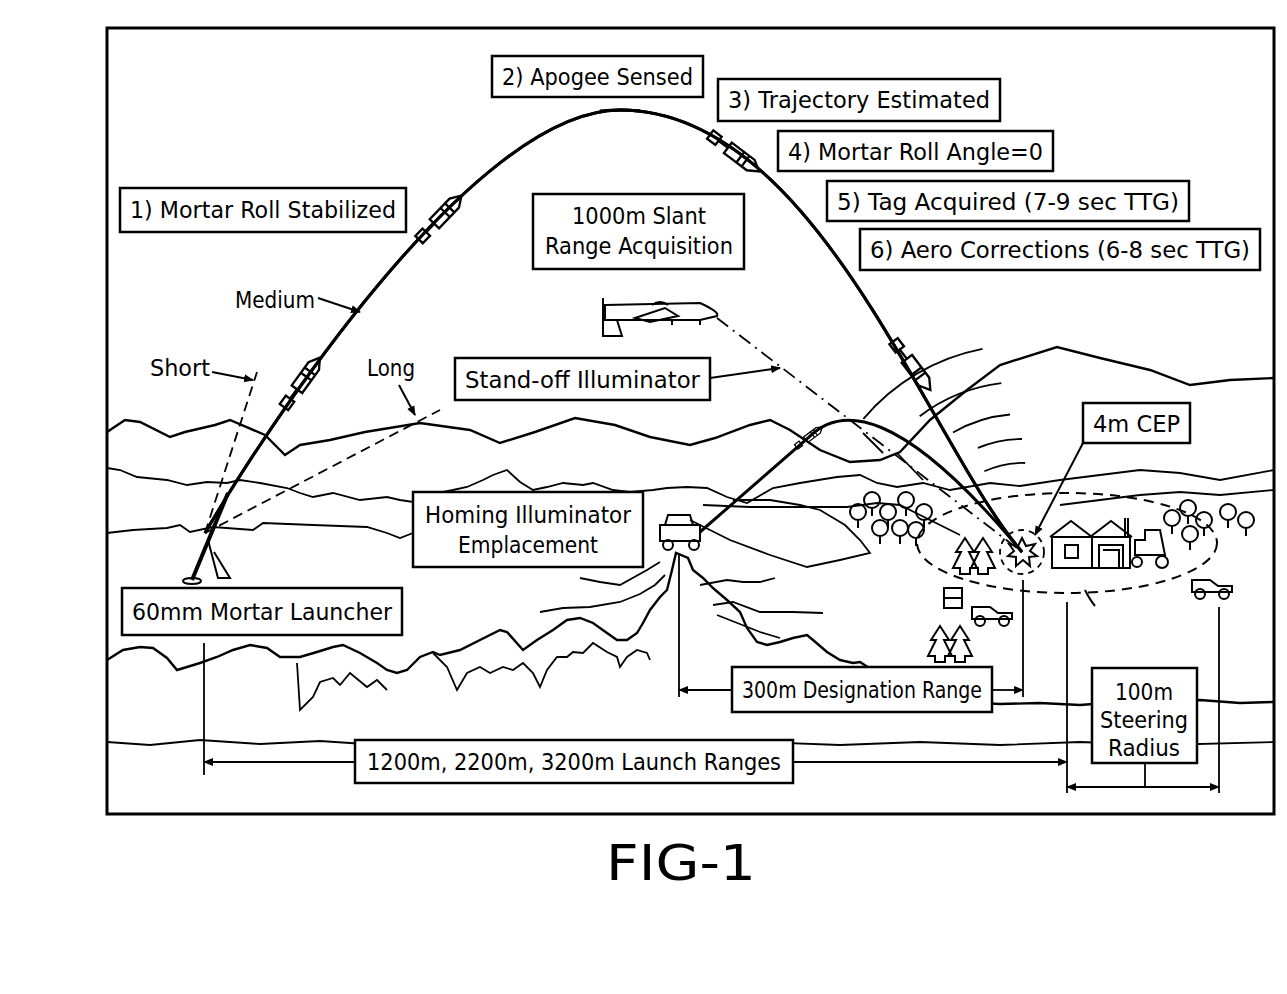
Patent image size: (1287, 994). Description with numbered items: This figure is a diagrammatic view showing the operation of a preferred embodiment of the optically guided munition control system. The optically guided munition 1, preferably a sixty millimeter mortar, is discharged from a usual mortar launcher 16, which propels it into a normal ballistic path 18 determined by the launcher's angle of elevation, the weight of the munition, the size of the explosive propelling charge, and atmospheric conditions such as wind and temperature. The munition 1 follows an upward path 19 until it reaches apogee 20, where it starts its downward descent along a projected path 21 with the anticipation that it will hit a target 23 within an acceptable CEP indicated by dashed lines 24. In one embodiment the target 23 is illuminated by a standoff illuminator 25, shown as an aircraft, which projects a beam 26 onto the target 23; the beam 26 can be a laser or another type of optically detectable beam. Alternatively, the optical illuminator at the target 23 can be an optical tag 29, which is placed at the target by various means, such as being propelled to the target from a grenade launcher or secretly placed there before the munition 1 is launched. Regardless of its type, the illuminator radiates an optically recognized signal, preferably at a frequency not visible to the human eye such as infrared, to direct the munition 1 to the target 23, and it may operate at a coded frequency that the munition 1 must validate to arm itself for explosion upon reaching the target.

The optically guided munition 1 is at (446, 240).
The mortar launcher 16 is at (200, 565).
The ballistic path 18 is at (487, 172).
The upward path 19 is at (394, 270).
The apogee 20 is at (622, 112).
The projected path 21 is at (860, 290).
The target 23 is at (1036, 572).
The dashed lines 24 is at (1100, 610).
The standoff illuminator 25 is at (705, 305).
The beam 26 is at (806, 385).
The optical tag 29 is at (803, 430).